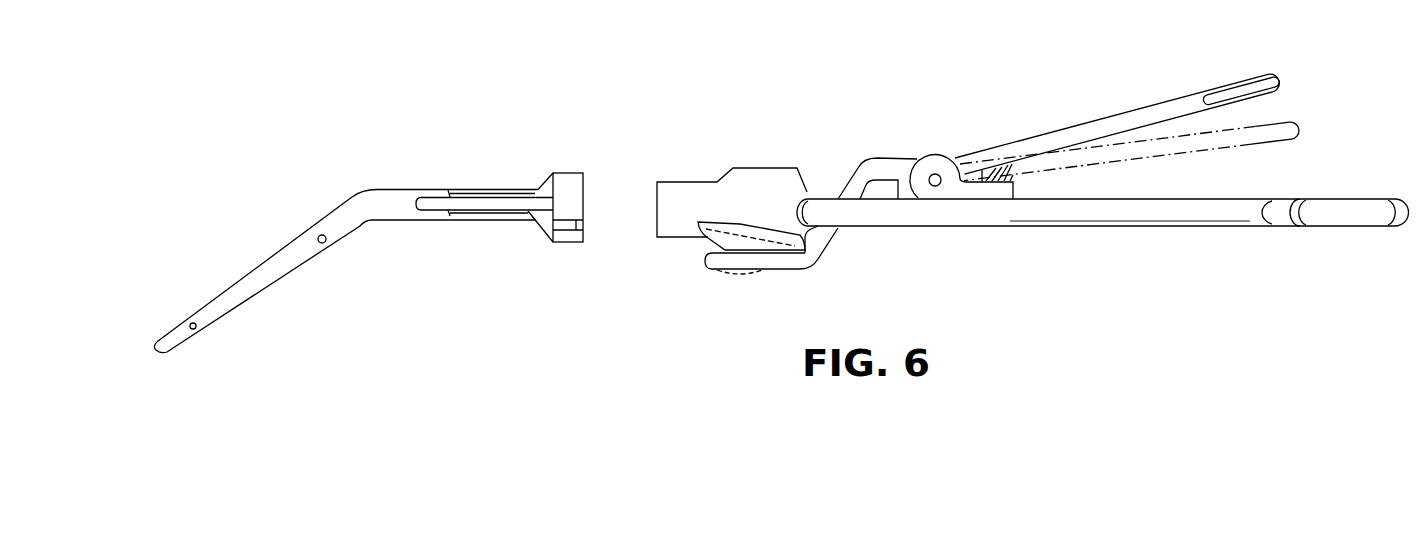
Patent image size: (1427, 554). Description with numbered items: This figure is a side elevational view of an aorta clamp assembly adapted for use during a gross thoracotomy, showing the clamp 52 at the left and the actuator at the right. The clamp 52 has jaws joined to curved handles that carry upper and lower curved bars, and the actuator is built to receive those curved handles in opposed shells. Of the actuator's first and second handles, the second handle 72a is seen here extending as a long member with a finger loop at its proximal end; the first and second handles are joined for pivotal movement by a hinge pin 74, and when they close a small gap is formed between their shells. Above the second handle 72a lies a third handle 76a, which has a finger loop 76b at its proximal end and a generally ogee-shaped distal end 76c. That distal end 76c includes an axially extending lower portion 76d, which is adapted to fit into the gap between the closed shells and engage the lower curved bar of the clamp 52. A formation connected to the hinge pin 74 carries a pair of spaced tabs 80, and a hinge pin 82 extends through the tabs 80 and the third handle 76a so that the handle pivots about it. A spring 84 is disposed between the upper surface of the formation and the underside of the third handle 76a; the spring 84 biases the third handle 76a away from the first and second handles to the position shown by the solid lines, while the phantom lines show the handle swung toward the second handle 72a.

The clamp 52 is at (497, 149).
The second handle 72a is at (1122, 217).
The hinge pin 74 is at (922, 240).
The third handle 76a is at (1100, 123).
The finger loop 76b is at (1233, 83).
The ogee-shaped distal end 76c is at (867, 171).
The lower portion 76d is at (785, 270).
The tabs 80 is at (928, 160).
The hinge pin 82 is at (940, 175).
The spring 84 is at (1026, 176).